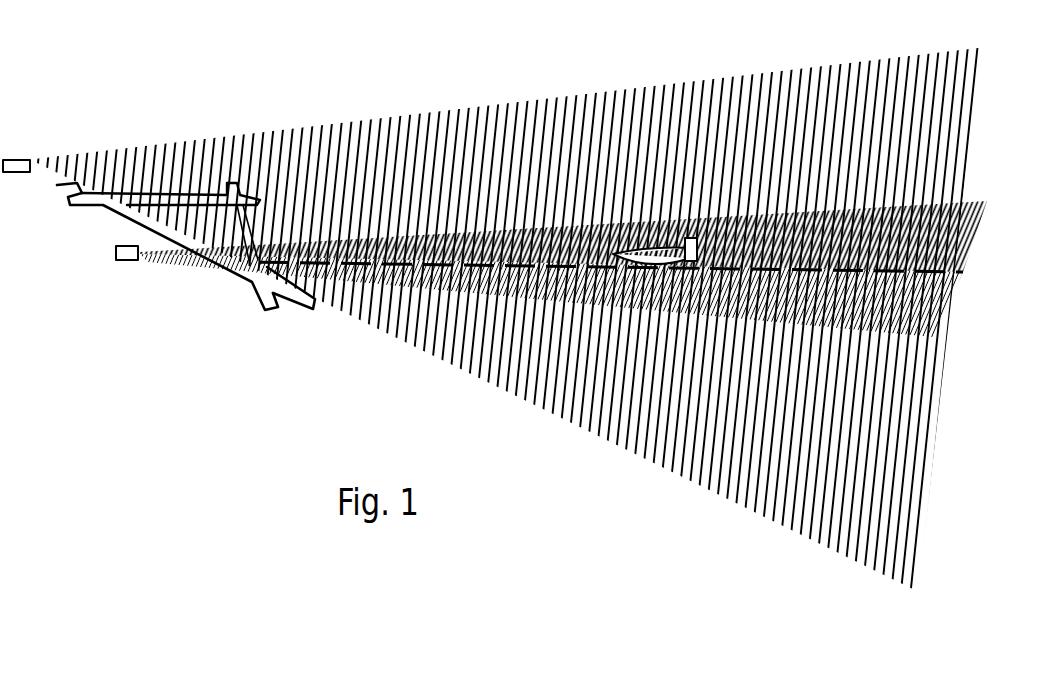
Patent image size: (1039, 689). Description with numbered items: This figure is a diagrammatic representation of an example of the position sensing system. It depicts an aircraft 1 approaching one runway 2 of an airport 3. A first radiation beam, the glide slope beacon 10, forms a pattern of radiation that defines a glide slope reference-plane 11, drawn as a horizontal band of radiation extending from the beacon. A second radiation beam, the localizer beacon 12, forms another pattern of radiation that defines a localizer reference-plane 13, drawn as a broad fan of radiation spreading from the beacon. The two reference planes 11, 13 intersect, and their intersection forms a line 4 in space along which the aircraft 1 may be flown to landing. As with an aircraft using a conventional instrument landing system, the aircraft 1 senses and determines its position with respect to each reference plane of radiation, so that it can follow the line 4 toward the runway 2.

The aircraft 1 is at (688, 238).
The runway 2 is at (315, 303).
The airport 3 is at (237, 281).
The line 4 is at (880, 273).
The glide slope beacon 10 is at (116, 252).
The glide slope reference-plane 11 is at (964, 250).
The localizer beacon 12 is at (5, 160).
The localizer reference-plane 13 is at (933, 459).